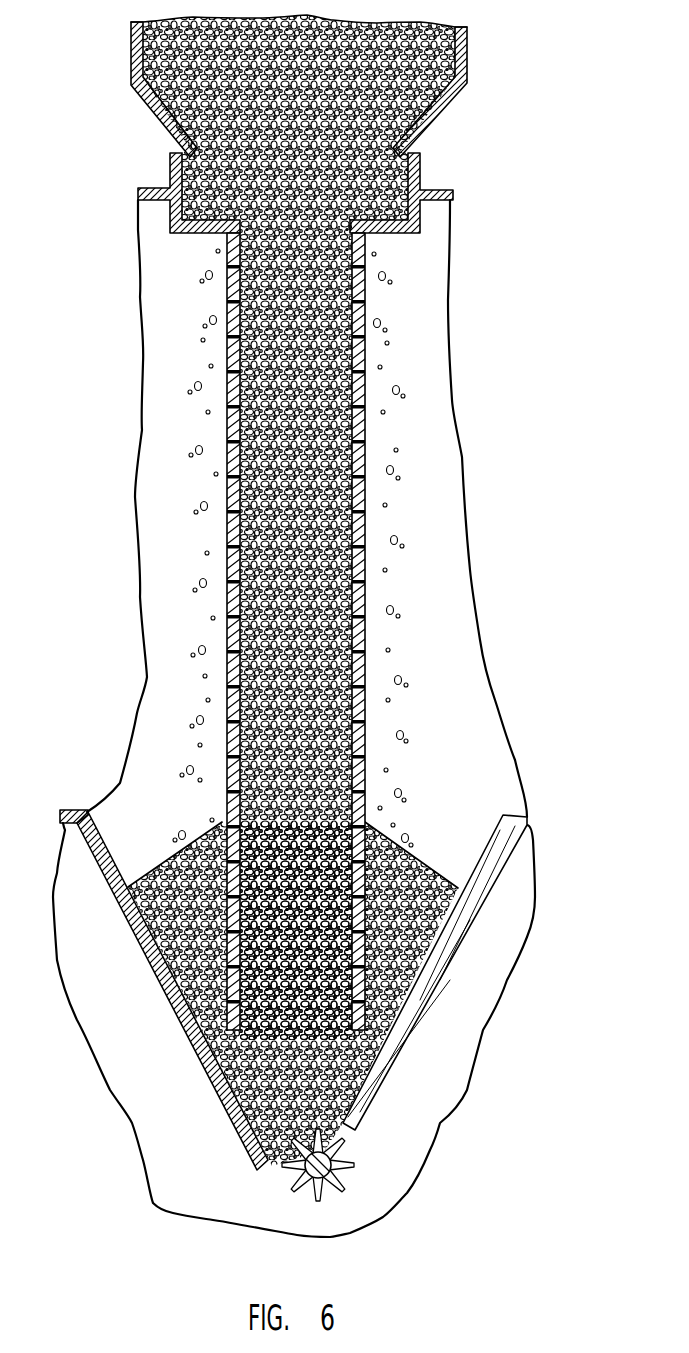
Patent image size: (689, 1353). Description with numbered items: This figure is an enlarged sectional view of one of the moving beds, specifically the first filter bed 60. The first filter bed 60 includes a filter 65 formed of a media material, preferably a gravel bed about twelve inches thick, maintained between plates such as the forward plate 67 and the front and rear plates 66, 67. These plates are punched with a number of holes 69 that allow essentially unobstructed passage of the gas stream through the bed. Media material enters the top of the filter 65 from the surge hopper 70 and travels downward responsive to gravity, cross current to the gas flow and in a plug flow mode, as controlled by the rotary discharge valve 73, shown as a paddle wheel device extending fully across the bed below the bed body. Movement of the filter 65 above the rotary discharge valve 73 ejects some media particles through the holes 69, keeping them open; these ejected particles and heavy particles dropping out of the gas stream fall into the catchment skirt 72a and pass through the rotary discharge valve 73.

The first filter bed 60 is at (415, 448).
The filter 65 is at (267, 450).
The front plate 66 is at (227, 530).
The forward plate 67 is at (365, 520).
The holes 69 is at (230, 255).
The surge hopper 70 is at (437, 132).
The catchment skirt 72a is at (412, 998).
The rotary discharge valve 73 is at (348, 1182).